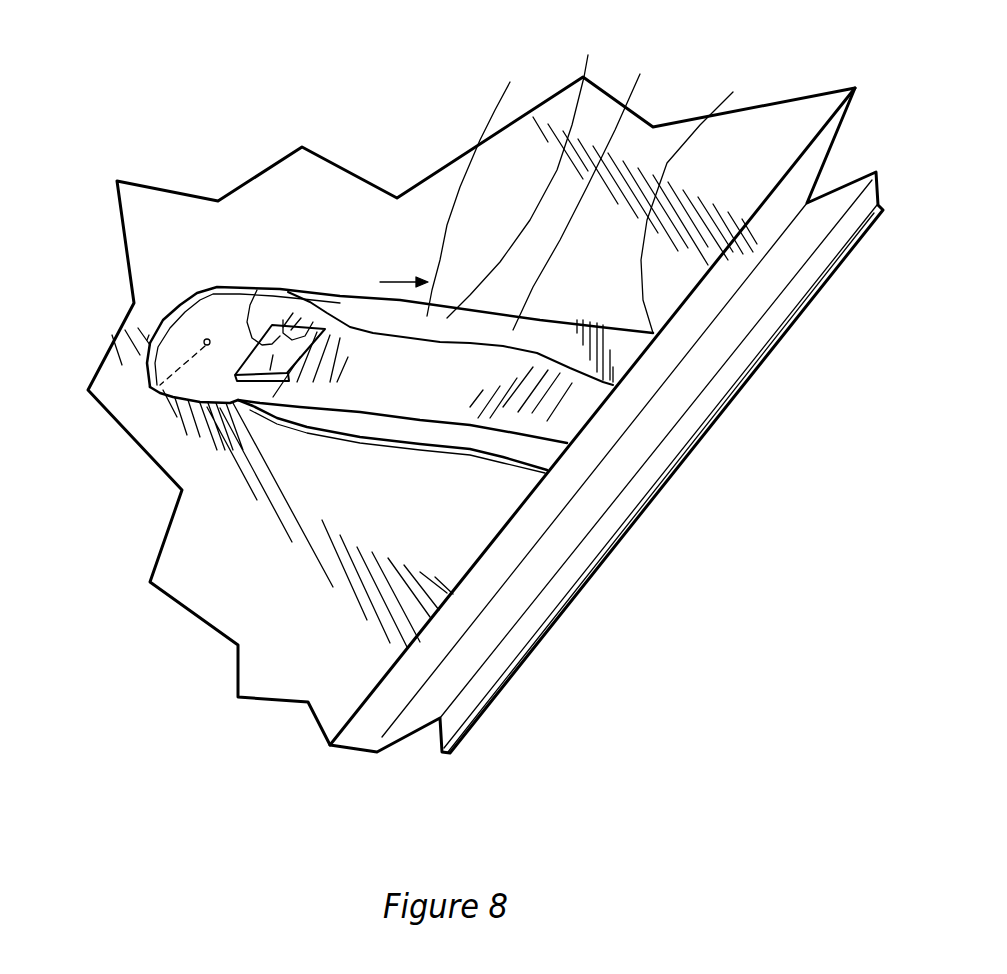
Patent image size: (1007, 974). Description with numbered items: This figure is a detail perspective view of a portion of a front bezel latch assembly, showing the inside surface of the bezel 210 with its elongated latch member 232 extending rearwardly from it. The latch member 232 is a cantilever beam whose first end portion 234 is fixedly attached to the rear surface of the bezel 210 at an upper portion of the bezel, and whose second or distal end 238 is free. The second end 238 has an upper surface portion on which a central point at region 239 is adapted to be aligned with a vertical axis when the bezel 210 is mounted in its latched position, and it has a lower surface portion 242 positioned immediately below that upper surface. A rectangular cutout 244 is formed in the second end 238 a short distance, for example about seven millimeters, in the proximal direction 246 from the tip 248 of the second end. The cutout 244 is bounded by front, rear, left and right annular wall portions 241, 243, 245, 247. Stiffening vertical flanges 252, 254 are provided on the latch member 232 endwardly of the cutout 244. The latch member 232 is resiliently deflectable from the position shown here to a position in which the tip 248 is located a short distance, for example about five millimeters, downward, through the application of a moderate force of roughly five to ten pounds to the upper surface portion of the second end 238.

The bezel 210 is at (748, 172).
The latch member 232 is at (482, 186).
The first end portion 234 is at (700, 199).
The second end 238 is at (227, 287).
The region 239 is at (148, 338).
The front annular wall portion 241 is at (530, 174).
The lower surface portion 242 is at (150, 363).
The rear annular wall portion 243 is at (257, 290).
The rectangular cutout 244 is at (285, 402).
The left annular wall portion 245 is at (272, 325).
The proximal direction 246 is at (404, 271).
The right annular wall portion 247 is at (237, 401).
The tip 248 is at (197, 288).
The stiffening vertical flange 252 is at (315, 415).
The stiffening vertical flange 254 is at (590, 189).